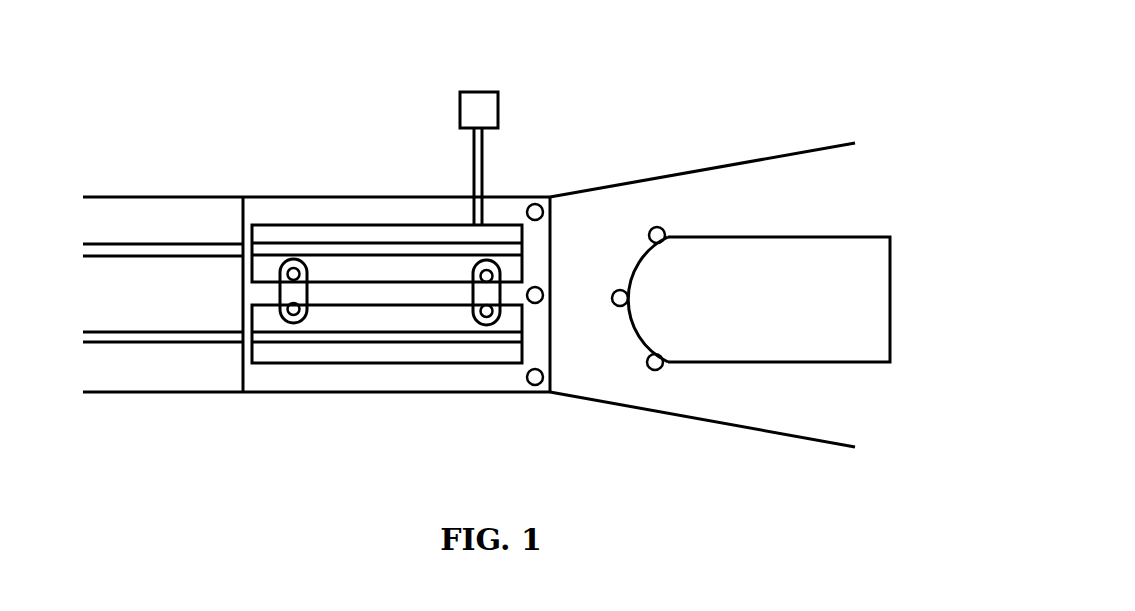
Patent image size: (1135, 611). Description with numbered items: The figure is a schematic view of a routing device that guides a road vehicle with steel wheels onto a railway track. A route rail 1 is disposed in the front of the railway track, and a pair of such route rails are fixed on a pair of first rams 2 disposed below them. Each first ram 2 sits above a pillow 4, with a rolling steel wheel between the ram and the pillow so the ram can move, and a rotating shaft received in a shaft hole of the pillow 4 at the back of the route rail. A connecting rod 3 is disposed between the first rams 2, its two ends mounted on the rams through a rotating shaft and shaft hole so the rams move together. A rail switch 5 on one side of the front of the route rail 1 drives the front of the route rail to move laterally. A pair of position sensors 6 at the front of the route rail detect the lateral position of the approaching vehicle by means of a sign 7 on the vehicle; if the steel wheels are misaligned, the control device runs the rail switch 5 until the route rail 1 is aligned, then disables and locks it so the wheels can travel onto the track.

The route rail 1 is at (302, 185).
The first ram 2 is at (386, 196).
The connecting rod 3 is at (390, 177).
The pillow 4 is at (469, 238).
The rail switch 5 is at (480, 127).
The position sensor 6 is at (538, 287).
The sign 7 is at (655, 228).